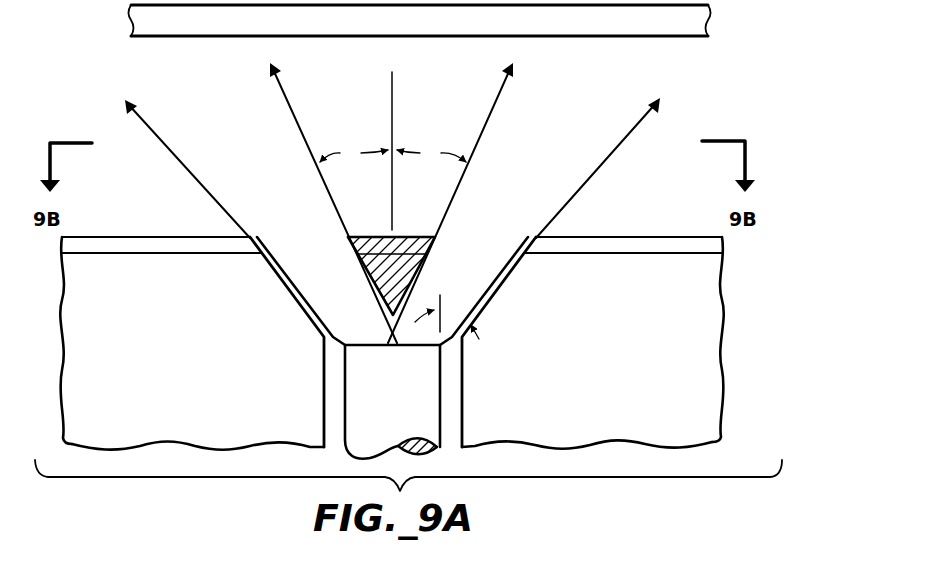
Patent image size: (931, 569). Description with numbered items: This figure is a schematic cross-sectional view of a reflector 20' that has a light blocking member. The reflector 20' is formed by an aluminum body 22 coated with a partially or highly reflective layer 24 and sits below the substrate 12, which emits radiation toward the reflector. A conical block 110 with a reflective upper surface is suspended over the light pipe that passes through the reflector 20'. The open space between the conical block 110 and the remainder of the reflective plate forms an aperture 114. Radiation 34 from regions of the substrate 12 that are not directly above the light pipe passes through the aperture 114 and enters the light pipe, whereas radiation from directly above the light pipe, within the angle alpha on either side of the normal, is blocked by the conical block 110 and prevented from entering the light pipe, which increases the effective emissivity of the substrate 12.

The substrate 12 is at (612, 28).
The light rays 34 is at (563, 137).
The reflector 20' is at (447, 350).
The reflective layer 24 is at (724, 240).
The aluminum body 22 is at (727, 365).
The aperture 114 is at (336, 280).
The conical block 110 is at (383, 285).